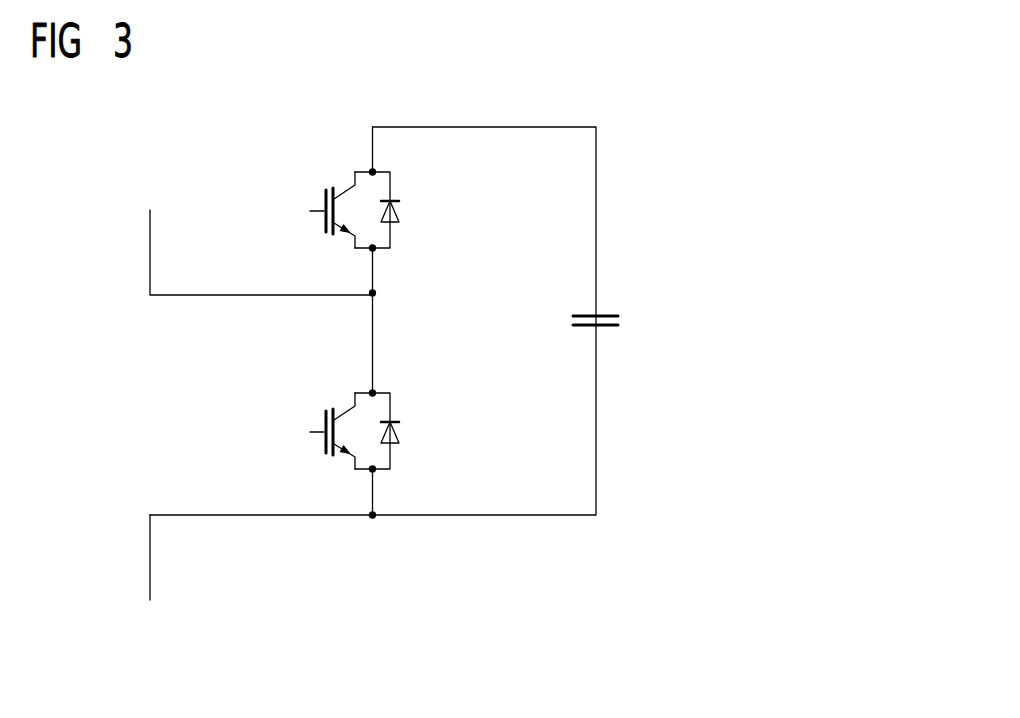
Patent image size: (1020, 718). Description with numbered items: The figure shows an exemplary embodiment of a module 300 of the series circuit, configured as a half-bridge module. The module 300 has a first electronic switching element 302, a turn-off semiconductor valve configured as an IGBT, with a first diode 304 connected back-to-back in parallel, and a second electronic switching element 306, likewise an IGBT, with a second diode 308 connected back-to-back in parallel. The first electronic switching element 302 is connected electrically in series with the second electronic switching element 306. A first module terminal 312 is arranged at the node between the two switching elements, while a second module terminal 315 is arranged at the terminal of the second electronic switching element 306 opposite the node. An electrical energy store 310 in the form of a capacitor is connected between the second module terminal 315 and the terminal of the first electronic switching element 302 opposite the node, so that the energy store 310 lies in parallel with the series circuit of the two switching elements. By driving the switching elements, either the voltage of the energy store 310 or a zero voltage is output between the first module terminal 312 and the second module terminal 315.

The module 300 is at (629, 107).
The first electronic switching element 302 is at (324, 209).
The first diode 304 is at (400, 216).
The second electronic switching element 306 is at (324, 430).
The second diode 308 is at (400, 437).
The energy store 310 is at (573, 318).
The first module terminal 312 is at (150, 247).
The second module terminal 315 is at (150, 563).